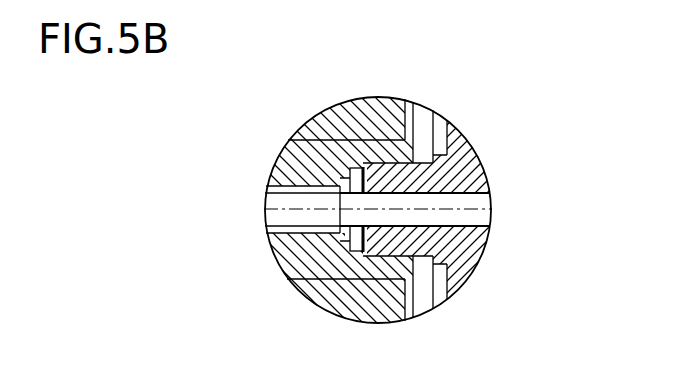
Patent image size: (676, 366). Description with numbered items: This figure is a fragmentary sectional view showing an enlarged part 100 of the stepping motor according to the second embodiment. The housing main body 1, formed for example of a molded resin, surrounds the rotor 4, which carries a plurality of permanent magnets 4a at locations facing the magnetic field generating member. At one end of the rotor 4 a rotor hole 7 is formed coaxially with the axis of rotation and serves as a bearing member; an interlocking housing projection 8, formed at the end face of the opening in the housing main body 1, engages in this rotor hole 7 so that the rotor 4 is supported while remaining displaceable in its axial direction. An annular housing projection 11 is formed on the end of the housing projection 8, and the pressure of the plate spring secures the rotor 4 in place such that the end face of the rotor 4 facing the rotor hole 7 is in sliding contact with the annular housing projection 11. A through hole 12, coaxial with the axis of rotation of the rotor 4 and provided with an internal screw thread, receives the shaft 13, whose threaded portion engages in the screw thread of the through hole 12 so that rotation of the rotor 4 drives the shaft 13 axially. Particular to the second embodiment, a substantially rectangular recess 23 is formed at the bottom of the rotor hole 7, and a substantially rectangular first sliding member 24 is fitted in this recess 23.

The part of the stepping motor 100 is at (396, 192).
The permanent magnets 4a is at (318, 124).
The rotor 4 is at (293, 161).
The through hole 12 is at (328, 288).
The rotor hole 7 is at (357, 283).
The interlocking housing projection 8 is at (413, 140).
The housing main body 1 is at (472, 250).
The first sliding member 24 is at (355, 171).
The recess 23 is at (354, 170).
The shaft 13 is at (305, 218).
The annular housing projection 11 is at (420, 218).